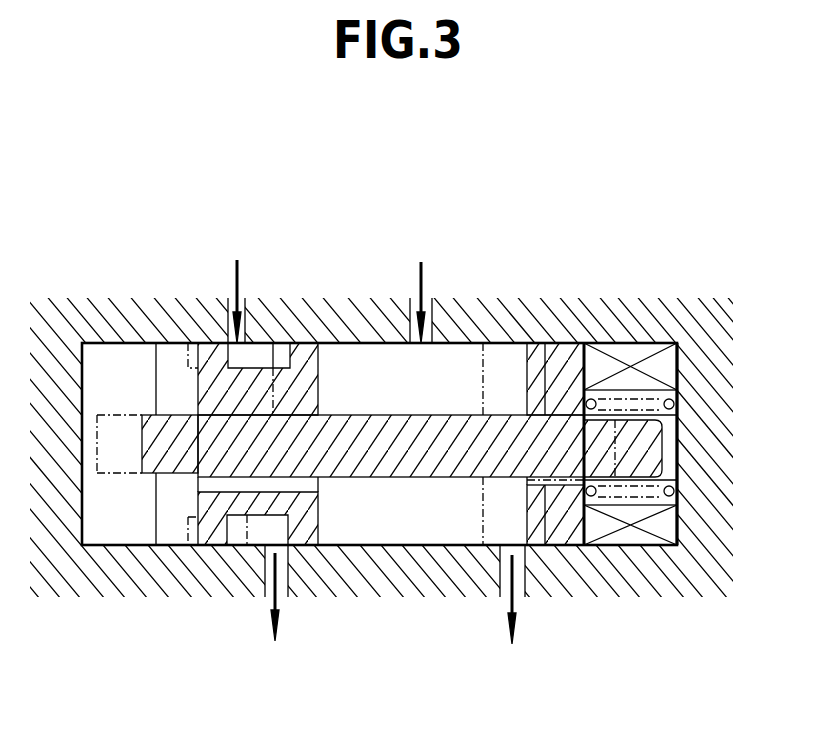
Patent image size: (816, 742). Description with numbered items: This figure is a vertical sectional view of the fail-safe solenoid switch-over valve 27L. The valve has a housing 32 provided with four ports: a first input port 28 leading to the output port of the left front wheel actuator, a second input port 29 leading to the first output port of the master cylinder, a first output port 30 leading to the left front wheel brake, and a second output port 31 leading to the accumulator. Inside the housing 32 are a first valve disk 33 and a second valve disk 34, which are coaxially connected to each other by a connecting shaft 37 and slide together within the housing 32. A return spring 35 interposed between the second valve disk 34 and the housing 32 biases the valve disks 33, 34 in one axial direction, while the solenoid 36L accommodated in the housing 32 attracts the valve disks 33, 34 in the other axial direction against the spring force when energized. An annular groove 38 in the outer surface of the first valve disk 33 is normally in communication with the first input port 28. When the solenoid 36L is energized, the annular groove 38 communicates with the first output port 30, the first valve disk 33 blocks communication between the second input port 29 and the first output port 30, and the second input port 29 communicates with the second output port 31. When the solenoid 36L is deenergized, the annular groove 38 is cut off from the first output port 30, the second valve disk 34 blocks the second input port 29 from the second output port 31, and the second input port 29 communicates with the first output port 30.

The fail-safe solenoid switch-over valve 27L is at (384, 604).
The first input port 28 is at (227, 316).
The second input port 29 is at (410, 320).
The first output port 30 is at (267, 576).
The second output port 31 is at (507, 573).
The housing 32 is at (608, 318).
The first valve disk 33 is at (203, 500).
The second valve disk 34 is at (533, 393).
The return spring 35 is at (677, 408).
The solenoid 36L is at (640, 357).
The connecting shaft 37 is at (390, 418).
The annular groove 38 is at (290, 350).